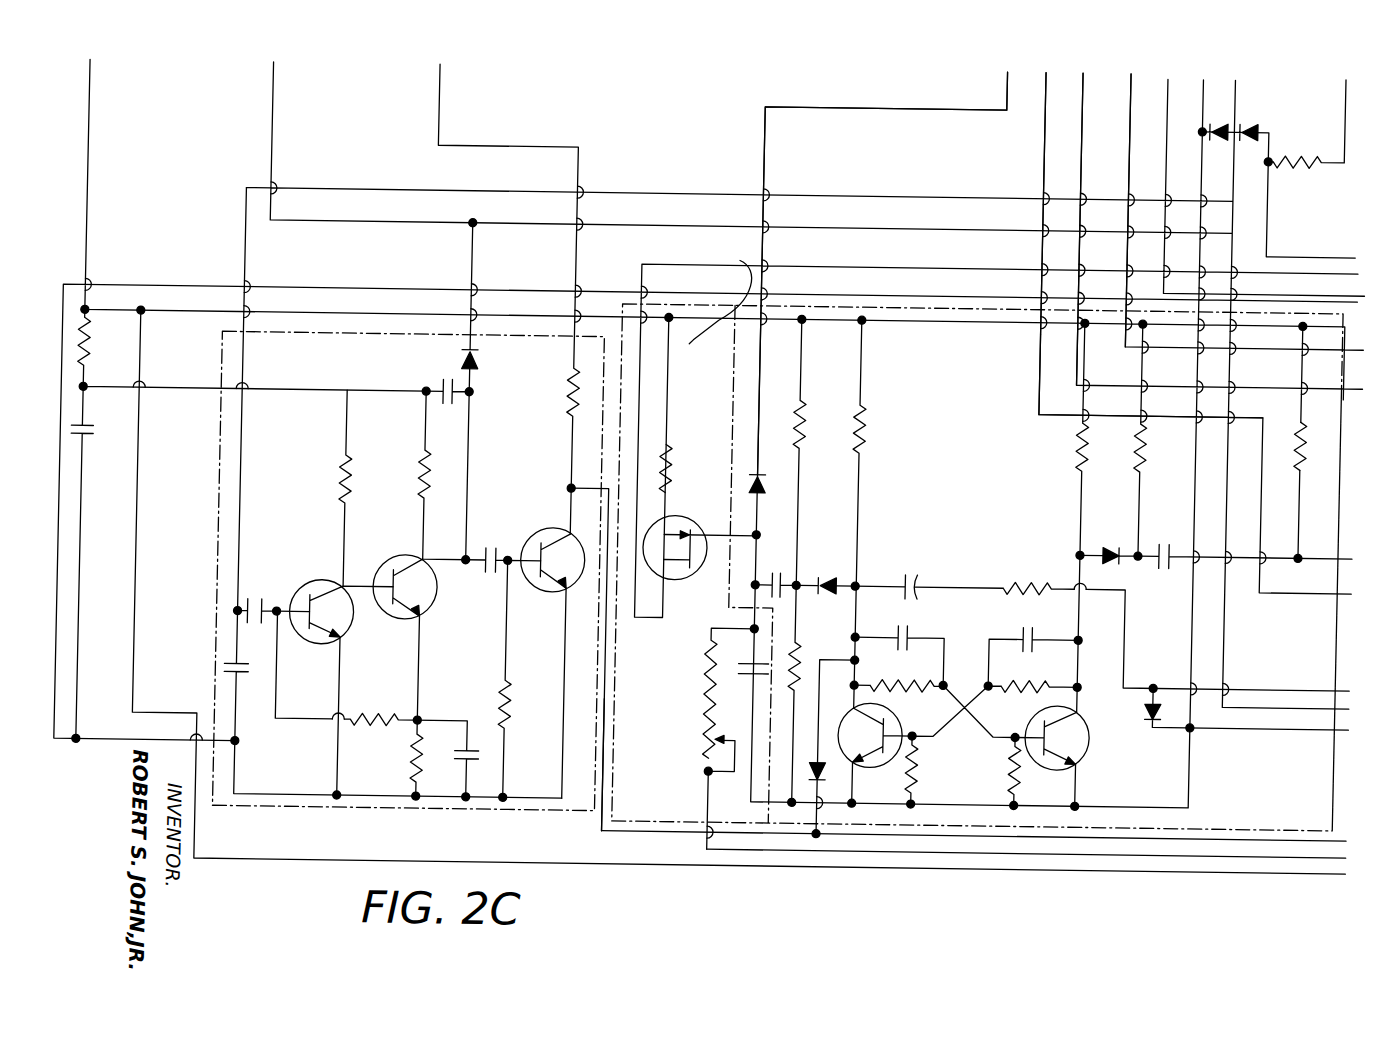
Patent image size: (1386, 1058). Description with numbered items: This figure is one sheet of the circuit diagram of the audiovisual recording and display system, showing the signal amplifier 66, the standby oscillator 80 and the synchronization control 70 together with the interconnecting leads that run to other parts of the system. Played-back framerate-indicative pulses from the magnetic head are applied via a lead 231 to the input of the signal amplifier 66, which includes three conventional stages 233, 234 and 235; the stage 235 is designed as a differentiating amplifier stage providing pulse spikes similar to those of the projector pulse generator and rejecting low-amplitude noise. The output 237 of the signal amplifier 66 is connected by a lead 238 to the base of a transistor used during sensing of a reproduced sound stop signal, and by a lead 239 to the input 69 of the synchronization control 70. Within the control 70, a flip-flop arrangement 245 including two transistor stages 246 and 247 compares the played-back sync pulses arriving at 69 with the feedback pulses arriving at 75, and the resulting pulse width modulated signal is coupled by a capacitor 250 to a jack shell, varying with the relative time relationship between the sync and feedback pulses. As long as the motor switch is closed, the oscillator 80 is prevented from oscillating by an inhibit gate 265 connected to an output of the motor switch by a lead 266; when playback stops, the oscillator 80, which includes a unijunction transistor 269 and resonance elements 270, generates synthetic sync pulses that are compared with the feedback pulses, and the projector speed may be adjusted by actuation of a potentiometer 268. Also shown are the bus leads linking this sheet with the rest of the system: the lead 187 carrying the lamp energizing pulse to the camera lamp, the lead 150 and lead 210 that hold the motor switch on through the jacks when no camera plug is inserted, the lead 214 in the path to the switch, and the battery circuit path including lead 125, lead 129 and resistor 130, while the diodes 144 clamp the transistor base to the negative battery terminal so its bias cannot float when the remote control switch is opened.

The lead 231 is at (240, 249).
The lead 238 is at (431, 112).
The output of the signal amplifier 237 is at (571, 490).
The lead 239 is at (608, 684).
The signal amplifier 66 is at (480, 672).
The stage 233 is at (328, 586).
The stage 234 is at (416, 556).
The differentiating amplifier stage 235 is at (552, 534).
The lead 266 is at (882, 108).
The oscillator 80 is at (711, 447).
The unijunction transistor 269 is at (720, 595).
The inhibit gate 265 is at (761, 478).
The resonance elements 270 is at (787, 632).
The potentiometer 268 is at (706, 750).
The synchronization control 70 is at (975, 520).
The capacitor 250 is at (916, 586).
The feedback pulse input 75 is at (1078, 552).
The input of the synchronization control 69 is at (860, 658).
The flip-flop arrangement 245 is at (972, 650).
The transistor stage 246 is at (906, 792).
The transistor stage 247 is at (1071, 789).
The lead 214 is at (1194, 638).
The lead 210 is at (1037, 380).
The lead 187 is at (1074, 122).
The lead 150 is at (1124, 160).
The lead 125 is at (1158, 120).
The diodes 144 is at (1247, 124).
The resistor 130 is at (1320, 156).
The lead 129 is at (1265, 202).